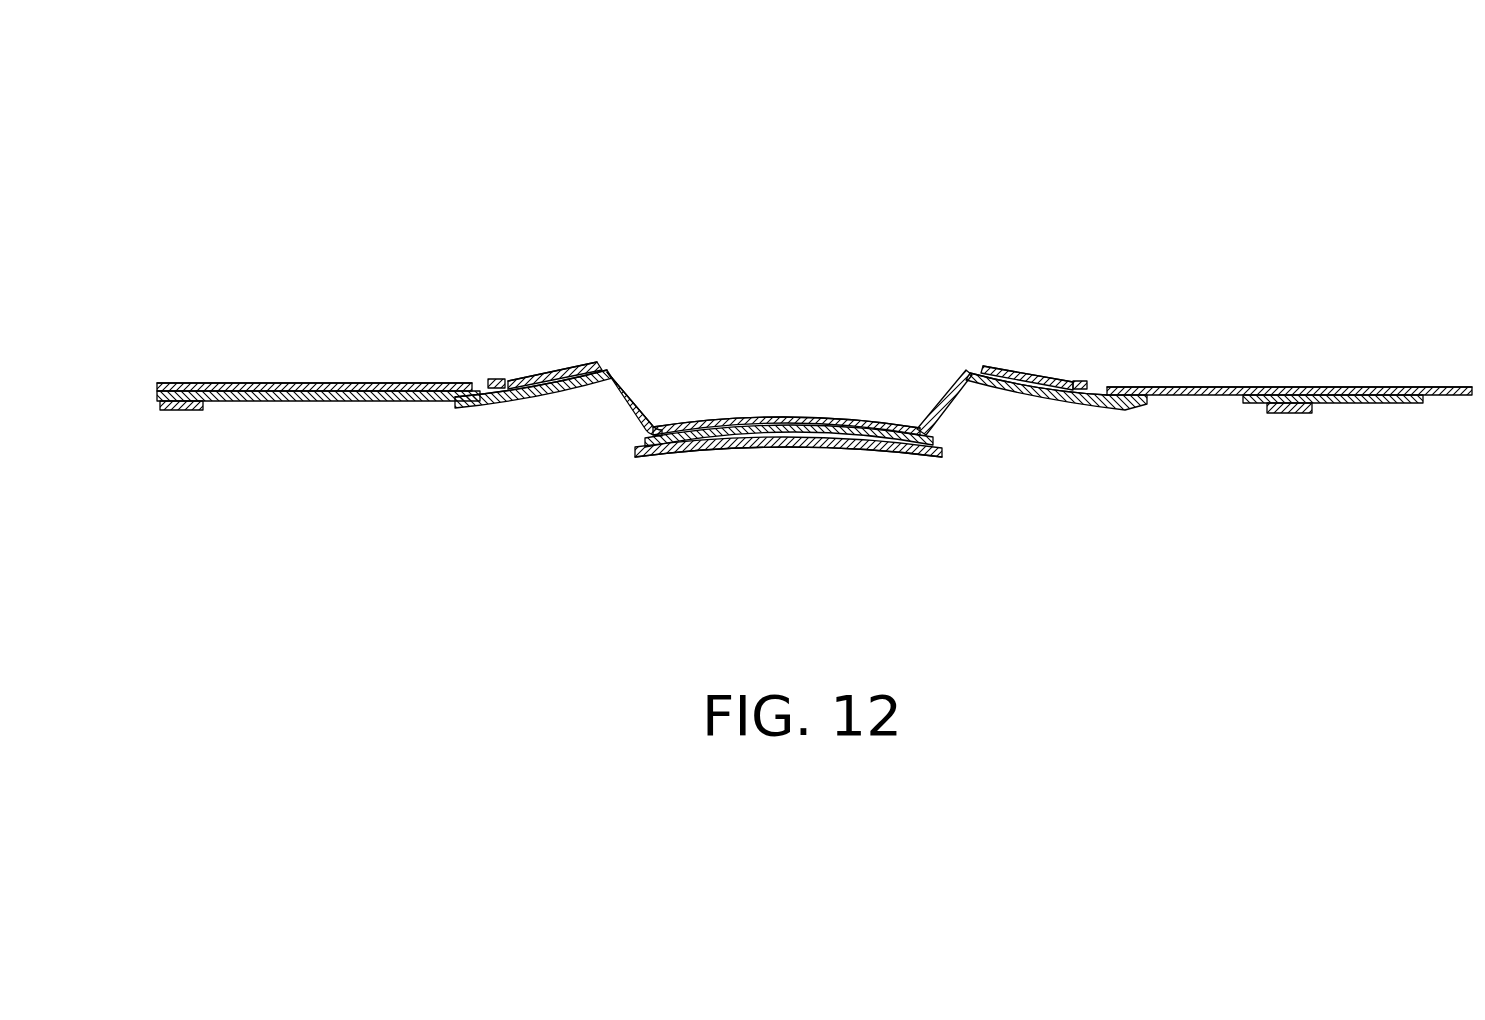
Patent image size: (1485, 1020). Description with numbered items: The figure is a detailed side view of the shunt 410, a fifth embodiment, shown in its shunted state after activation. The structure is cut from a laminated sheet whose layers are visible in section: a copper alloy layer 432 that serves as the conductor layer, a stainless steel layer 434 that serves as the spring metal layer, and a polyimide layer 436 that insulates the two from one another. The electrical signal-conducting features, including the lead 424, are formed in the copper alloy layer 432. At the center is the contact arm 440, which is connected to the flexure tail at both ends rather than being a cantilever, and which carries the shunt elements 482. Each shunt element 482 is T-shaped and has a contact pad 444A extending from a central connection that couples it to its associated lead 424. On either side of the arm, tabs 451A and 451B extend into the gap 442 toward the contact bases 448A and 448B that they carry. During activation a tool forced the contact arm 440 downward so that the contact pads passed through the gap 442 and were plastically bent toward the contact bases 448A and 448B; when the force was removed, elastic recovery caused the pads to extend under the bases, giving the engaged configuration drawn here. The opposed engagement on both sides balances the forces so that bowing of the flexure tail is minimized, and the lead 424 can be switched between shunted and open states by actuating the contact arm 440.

The shunt 410 is at (998, 178).
The contact arm 440 is at (815, 315).
The copper alloy layer 432 is at (348, 383).
The polyimide layer 436 is at (572, 373).
The stainless steel layer 434 is at (850, 447).
The gap 442 is at (643, 392).
The contact pad 444A is at (950, 405).
The lead 424 is at (1177, 390).
The contact base 448A is at (548, 398).
The contact base 448B is at (979, 385).
The tab 451A is at (548, 377).
The tab 451B is at (1040, 407).
The shunt element 482 is at (796, 475).